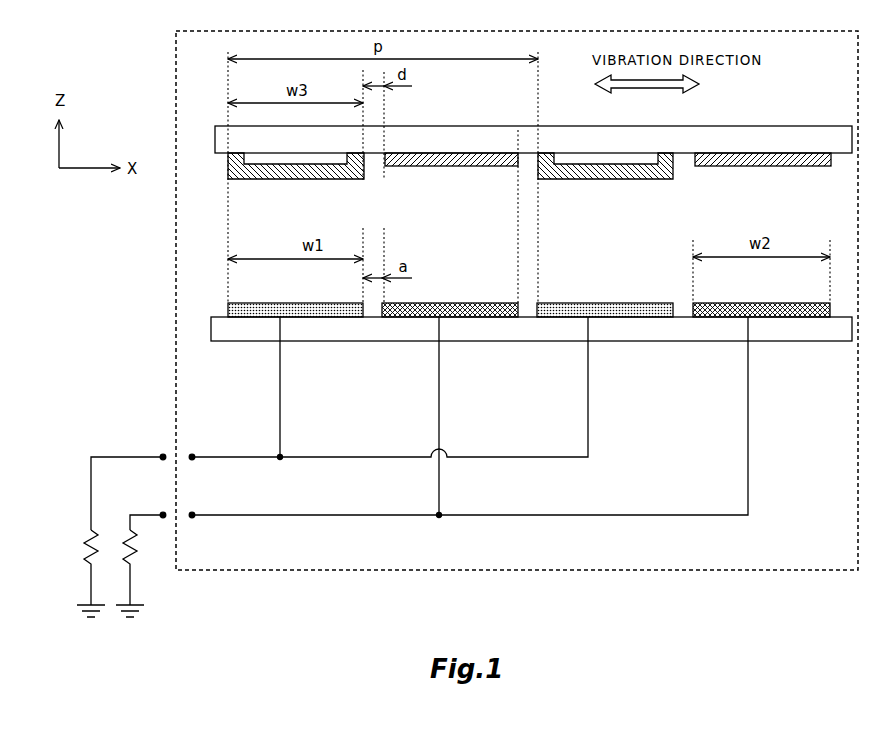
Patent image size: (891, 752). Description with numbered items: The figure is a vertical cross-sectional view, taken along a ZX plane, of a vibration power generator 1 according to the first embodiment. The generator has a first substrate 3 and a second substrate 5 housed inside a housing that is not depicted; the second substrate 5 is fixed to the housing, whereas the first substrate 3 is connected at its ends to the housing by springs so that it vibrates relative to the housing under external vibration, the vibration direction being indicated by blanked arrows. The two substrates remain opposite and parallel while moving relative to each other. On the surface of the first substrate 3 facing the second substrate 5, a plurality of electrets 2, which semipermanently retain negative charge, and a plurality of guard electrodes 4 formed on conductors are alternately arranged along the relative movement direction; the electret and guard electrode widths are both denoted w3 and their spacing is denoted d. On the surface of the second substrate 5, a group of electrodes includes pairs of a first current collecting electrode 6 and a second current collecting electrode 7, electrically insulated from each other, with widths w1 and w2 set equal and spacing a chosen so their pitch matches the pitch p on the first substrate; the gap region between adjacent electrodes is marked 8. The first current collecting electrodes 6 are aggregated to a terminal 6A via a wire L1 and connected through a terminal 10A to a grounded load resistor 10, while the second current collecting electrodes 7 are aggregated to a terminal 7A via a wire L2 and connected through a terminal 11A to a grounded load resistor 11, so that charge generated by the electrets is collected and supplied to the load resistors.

The vibration power generator 1 is at (625, 571).
The electret 2 is at (298, 179).
The first substrate 3 is at (767, 126).
The guard electrode 4 is at (444, 166).
The second substrate 5 is at (228, 342).
The first current collecting electrode 6 is at (270, 303).
The second current collecting electrode 7 is at (432, 303).
The gap between electrodes 8 is at (363, 318).
The load resistor 10 is at (85, 543).
The load resistor 11 is at (135, 555).
The terminal 10A is at (160, 454).
The terminal 11A is at (160, 513).
The terminal 6A is at (193, 456).
The terminal 7A is at (194, 520).
The wire L1 is at (570, 458).
The wire L2 is at (590, 516).